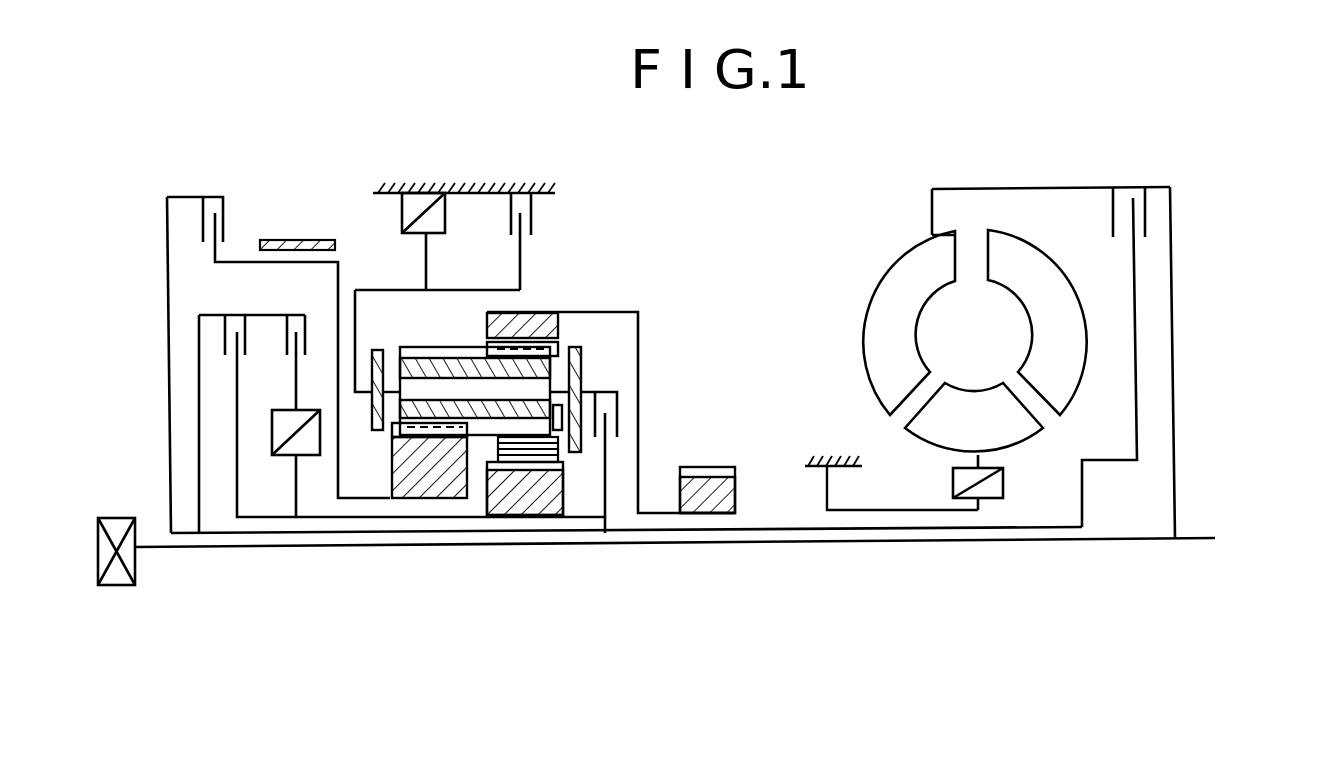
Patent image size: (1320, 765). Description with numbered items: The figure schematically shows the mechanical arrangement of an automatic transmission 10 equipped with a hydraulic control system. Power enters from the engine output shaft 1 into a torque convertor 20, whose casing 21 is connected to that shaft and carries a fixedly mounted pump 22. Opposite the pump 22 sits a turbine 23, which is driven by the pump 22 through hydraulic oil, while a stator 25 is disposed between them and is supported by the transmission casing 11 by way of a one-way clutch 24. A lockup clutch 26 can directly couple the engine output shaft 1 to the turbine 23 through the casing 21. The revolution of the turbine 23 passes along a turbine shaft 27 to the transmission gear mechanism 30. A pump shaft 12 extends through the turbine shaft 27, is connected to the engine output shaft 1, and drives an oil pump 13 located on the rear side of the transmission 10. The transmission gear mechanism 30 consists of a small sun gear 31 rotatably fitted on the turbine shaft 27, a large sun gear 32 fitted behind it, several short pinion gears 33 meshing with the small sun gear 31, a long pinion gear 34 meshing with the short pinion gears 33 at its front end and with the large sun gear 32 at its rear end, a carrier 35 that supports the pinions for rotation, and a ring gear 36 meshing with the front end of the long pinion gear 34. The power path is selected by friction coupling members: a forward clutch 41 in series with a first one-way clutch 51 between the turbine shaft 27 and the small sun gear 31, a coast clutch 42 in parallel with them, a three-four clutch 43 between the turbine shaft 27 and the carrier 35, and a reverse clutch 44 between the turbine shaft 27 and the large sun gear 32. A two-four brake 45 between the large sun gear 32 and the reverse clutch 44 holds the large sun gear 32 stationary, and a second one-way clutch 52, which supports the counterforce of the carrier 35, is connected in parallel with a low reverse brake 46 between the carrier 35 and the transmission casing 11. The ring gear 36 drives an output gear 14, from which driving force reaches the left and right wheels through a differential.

The engine output shaft 1 is at (1202, 540).
The automatic transmission 10 is at (1236, 158).
The transmission casing 11 is at (498, 190).
The pump shaft 12 is at (272, 549).
The oil pump 13 is at (127, 586).
The output gear 14 is at (702, 477).
The torque convertor 20 is at (1092, 184).
The casing 21 is at (1022, 186).
The pump 22 is at (888, 306).
The turbine 23 is at (1055, 293).
The one-way clutch 24 is at (1004, 480).
The stator 25 is at (975, 410).
The lockup clutch 26 is at (1147, 221).
The turbine shaft 27 is at (763, 528).
The transmission gear mechanism 30 is at (662, 338).
The small sun gear 31 is at (507, 480).
The large sun gear 32 is at (440, 480).
The short pinion gears 33 is at (542, 450).
The long pinion gear 34 is at (441, 368).
The carrier 35 is at (578, 347).
The ring gear 36 is at (536, 314).
The forward clutch 41 is at (300, 334).
The coast clutch 42 is at (244, 334).
The 3-4 clutch 43 is at (606, 392).
The reverse clutch 44 is at (224, 214).
The 2-4 brake 45 is at (307, 238).
The low reverse brake 46 is at (534, 212).
The first one-way clutch 51 is at (272, 440).
The second one-way clutch 52 is at (445, 205).